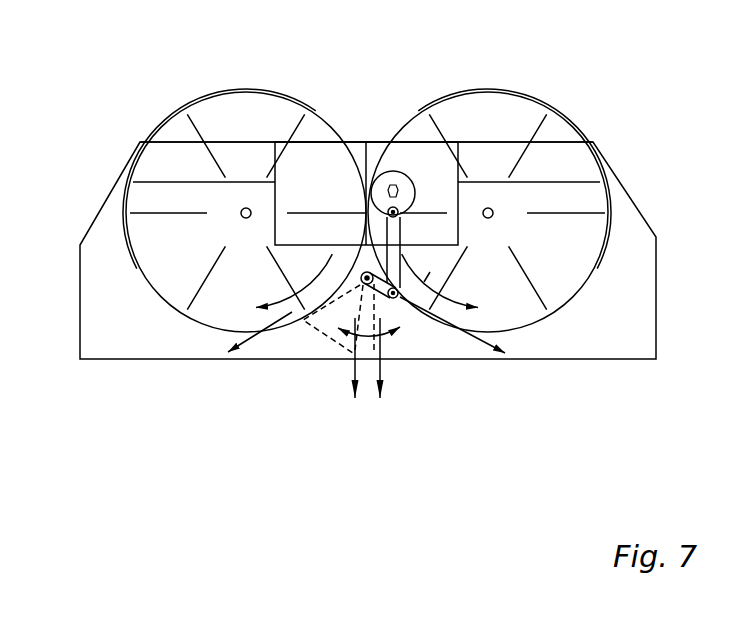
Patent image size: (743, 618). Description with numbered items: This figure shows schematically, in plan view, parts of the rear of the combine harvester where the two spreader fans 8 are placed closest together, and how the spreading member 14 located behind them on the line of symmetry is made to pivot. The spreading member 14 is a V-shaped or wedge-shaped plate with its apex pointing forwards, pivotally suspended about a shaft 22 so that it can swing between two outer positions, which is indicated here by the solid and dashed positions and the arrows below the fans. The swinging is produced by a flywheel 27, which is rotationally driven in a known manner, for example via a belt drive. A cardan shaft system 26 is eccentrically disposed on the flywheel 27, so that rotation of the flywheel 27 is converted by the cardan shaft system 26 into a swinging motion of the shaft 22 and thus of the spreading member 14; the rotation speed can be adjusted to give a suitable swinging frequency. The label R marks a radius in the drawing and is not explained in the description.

The spreader fans 8 is at (180, 88).
The flywheel 27 is at (380, 175).
The cardan shaft system 26 is at (397, 233).
The shaft 22 is at (365, 272).
The spreading member 14 is at (392, 337).
The radius R is at (424, 282).